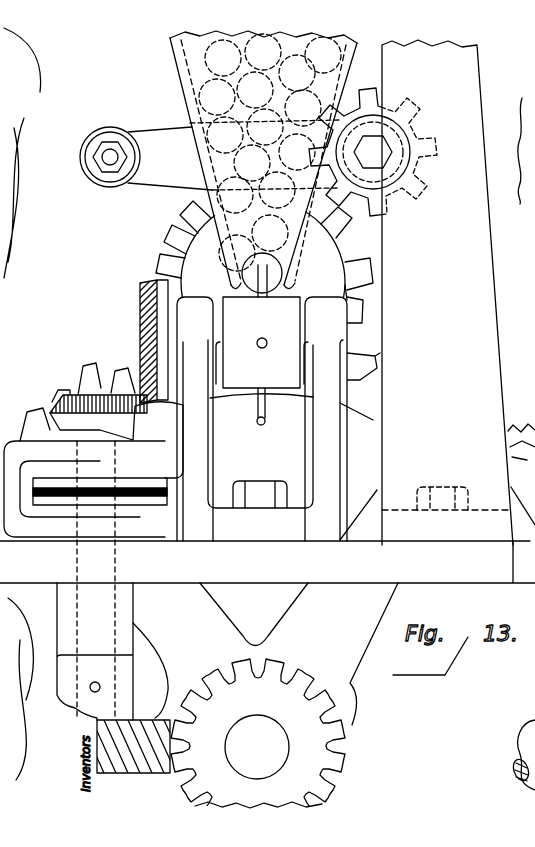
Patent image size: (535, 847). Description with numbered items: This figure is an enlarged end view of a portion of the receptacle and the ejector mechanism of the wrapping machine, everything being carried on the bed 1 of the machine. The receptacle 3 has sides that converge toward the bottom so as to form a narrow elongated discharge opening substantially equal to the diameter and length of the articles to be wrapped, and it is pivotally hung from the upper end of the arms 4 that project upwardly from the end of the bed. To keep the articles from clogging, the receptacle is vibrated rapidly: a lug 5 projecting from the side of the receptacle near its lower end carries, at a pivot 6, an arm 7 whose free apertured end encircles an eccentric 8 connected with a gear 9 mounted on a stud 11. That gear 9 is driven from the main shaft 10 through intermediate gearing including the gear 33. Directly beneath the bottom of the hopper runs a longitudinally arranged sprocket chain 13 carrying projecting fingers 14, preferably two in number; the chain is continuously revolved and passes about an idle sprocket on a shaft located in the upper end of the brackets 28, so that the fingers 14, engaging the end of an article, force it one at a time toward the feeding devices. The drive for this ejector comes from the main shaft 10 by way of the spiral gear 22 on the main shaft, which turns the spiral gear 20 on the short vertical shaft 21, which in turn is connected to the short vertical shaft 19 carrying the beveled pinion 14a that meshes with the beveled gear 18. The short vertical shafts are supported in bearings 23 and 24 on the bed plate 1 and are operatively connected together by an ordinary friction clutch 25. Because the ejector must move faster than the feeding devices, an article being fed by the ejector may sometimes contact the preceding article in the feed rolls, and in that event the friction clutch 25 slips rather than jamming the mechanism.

The bed 1 is at (340, 580).
The receptacle 3 is at (180, 62).
The arms 4 is at (482, 165).
The lug 5 is at (163, 182).
The pivot 6 is at (114, 148).
The arm 7 is at (268, 290).
The eccentric 8 is at (410, 140).
The gear 9 is at (398, 100).
The main shaft 10 is at (272, 735).
The stud 11 is at (382, 133).
The sprocket chain 13 is at (290, 332).
The projecting fingers 14 is at (268, 277).
The beveled pinion 14a is at (115, 372).
The beveled gear 18 is at (140, 302).
The short vertical shaft 19 is at (107, 452).
The spiral gear 20 is at (137, 770).
The short vertical shaft 21 is at (93, 527).
The spiral gear 22 is at (298, 667).
The bearing 23 is at (130, 455).
The bearing 24 is at (160, 533).
The friction clutch 25 is at (165, 492).
The brackets 28 is at (317, 448).
The gear 33 is at (352, 270).